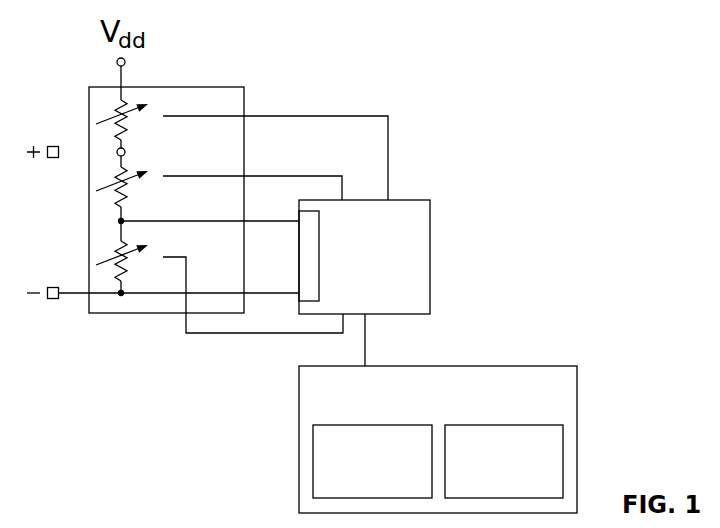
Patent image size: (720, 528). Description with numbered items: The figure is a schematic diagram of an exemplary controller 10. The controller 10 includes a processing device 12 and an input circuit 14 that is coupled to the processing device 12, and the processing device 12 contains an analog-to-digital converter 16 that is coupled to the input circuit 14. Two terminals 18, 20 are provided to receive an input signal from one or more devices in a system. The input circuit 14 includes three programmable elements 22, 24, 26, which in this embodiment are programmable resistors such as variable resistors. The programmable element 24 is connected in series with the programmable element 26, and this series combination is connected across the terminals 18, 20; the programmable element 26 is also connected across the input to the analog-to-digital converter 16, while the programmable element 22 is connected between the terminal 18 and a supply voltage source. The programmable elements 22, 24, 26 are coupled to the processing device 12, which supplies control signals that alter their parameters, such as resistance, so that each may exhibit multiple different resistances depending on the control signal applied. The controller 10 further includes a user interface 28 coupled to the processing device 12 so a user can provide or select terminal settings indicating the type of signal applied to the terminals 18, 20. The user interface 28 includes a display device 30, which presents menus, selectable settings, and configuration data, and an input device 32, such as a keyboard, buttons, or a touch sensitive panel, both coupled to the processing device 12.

The controller 10 is at (418, 40).
The processing device 12 is at (405, 200).
The input circuit 14 is at (197, 87).
The analog-to-digital converter 16 is at (307, 257).
The terminal 18 is at (52, 158).
The terminal 20 is at (52, 299).
The programmable element 22 is at (117, 107).
The programmable element 24 is at (124, 176).
The programmable element 26 is at (116, 243).
The user interface 28 is at (345, 366).
The display device 30 is at (358, 425).
The input device 32 is at (490, 425).